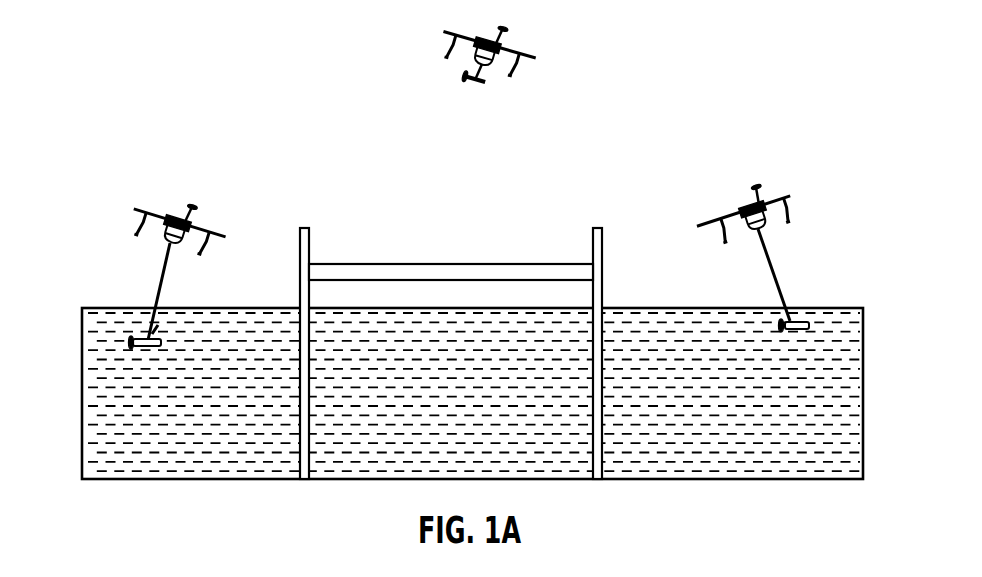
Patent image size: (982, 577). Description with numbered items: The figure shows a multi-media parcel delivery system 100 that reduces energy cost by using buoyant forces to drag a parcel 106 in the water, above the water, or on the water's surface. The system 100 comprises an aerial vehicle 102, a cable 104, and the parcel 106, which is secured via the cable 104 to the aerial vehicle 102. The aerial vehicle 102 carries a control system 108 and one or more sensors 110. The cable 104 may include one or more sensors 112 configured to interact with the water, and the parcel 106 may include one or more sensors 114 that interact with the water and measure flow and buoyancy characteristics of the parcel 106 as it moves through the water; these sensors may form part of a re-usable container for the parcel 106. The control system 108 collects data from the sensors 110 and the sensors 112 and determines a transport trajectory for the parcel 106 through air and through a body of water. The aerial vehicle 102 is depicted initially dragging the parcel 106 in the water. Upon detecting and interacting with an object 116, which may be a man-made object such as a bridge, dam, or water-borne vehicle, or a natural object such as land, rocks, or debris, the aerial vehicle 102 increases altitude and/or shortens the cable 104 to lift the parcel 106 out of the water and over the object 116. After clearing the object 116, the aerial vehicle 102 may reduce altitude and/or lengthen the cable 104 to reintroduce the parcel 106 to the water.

The multi-media parcel delivery system 100 is at (528, 36).
The aerial vehicle 102 is at (132, 212).
The cable 104 is at (156, 283).
The parcel 106 is at (130, 342).
The control system 108 is at (170, 215).
The sensors 110 is at (191, 210).
The sensors 112 is at (170, 325).
The sensors 114 is at (146, 352).
The object 116 is at (567, 247).